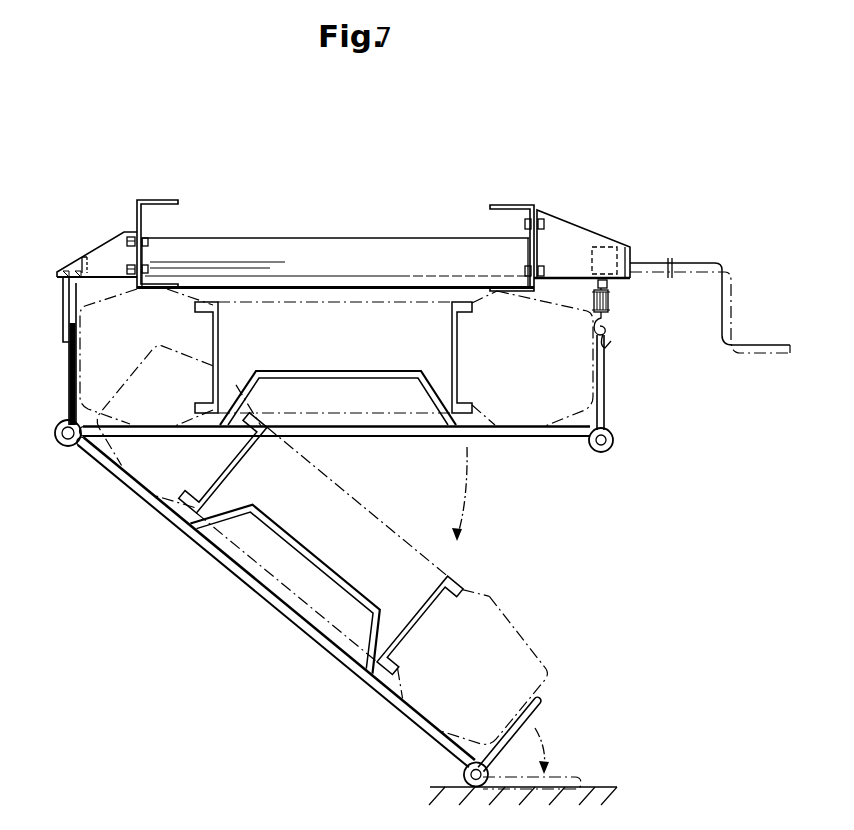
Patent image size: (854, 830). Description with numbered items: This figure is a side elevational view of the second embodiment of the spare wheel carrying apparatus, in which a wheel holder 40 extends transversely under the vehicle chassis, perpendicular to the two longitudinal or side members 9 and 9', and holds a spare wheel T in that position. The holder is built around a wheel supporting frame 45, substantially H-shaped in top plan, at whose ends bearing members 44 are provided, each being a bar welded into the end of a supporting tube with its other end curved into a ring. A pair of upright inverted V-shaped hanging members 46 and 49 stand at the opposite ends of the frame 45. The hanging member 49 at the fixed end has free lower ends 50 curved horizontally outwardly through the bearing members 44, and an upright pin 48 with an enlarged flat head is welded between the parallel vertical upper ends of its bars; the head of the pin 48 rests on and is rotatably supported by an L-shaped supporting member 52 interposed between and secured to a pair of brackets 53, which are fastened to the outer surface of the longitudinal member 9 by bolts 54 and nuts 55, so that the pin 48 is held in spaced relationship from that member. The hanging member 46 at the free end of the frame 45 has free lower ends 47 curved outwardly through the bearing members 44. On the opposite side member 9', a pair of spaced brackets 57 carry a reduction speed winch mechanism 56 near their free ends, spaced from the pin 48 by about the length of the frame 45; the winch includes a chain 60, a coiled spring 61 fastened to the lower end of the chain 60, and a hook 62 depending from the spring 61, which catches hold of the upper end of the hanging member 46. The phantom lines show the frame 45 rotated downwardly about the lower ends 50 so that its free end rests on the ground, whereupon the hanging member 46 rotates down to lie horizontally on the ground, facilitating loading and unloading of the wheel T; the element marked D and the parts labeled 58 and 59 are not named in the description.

The longitudinal member 9 is at (163, 214).
The longitudinal member 9' is at (498, 217).
The wheel holder 40 is at (311, 367).
The bearing member 44 is at (613, 441).
The wheel supporting frame 45 is at (268, 540).
The hanging member 46 is at (604, 386).
The free lower end 47 is at (611, 448).
The upright pin 48 is at (63, 292).
The hanging member 49 is at (75, 373).
The free lower end 50 is at (76, 444).
The supporting member 52 is at (82, 258).
The bracket 53 is at (97, 245).
The bolt 54 is at (142, 237).
The nut 55 is at (128, 233).
The reduction speed winch mechanism 56 is at (612, 252).
The bracket 57 is at (567, 238).
The bolt 58 is at (527, 222).
The bolt 59 is at (541, 222).
The chain 60 is at (608, 284).
The coiled spring 61 is at (610, 298).
The hook 62 is at (610, 343).
The spare wheel T is at (252, 300).
The bracket D is at (452, 340).